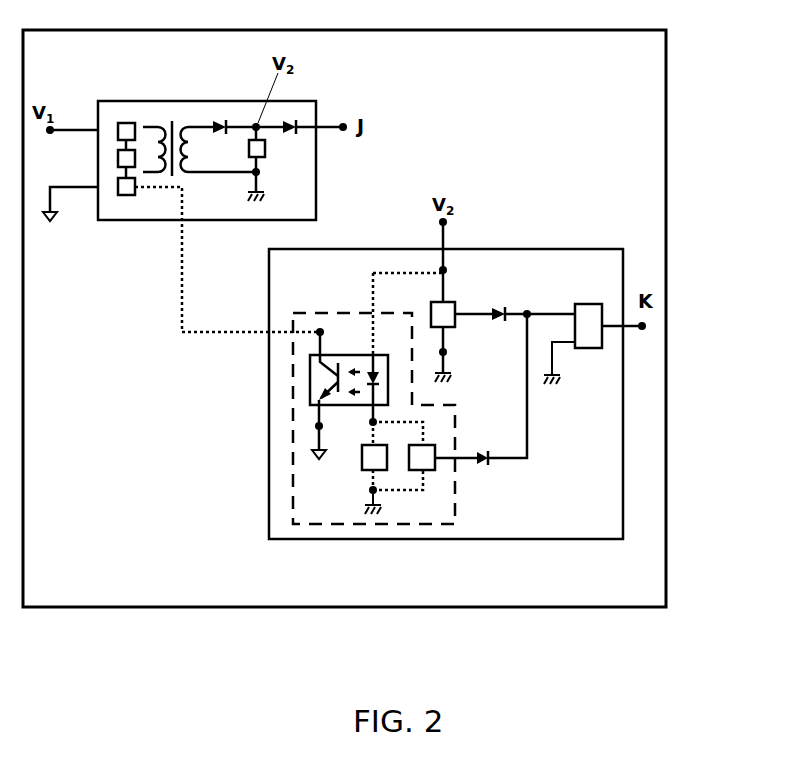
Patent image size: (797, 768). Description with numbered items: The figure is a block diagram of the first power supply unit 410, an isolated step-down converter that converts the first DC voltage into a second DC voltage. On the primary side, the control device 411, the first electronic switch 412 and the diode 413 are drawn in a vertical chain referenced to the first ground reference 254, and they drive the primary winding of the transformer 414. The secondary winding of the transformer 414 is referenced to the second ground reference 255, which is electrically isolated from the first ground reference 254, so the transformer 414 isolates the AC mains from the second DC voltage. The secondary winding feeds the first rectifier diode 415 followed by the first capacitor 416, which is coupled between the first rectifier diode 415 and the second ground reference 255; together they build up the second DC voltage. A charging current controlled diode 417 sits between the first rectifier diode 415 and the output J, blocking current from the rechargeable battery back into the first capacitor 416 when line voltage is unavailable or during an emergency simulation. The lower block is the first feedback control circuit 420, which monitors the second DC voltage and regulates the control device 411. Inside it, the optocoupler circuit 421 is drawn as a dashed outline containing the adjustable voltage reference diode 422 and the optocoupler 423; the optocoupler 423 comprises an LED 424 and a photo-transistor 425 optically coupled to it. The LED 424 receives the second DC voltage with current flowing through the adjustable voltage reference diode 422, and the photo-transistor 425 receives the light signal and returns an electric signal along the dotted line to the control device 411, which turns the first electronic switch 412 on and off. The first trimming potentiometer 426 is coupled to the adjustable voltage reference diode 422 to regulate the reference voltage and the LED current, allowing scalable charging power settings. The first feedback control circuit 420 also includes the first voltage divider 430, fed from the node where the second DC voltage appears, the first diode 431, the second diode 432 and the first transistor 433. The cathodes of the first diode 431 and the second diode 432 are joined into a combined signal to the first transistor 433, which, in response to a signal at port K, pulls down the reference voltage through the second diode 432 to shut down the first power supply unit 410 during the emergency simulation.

The first power supply unit 410 is at (672, 296).
The control device 411 is at (127, 196).
The first electronic switch 412 is at (118, 164).
The diode 413 is at (126, 122).
The transformer 414 is at (177, 122).
The first rectifier diode 415 is at (218, 121).
The first capacitor 416 is at (265, 157).
The charging current controlled diode 417 is at (297, 120).
The first feedback control circuit 420 is at (632, 450).
The optocoupler circuit 421 is at (284, 372).
The adjustable voltage reference diode 422 is at (436, 472).
The optocoupler 423 is at (343, 344).
The LED 424 is at (374, 374).
The photo-transistor 425 is at (327, 382).
The first trimming potentiometer 426 is at (360, 457).
The first voltage divider 430 is at (457, 302).
The first diode 431 is at (500, 300).
The second diode 432 is at (489, 463).
The first transistor 433 is at (590, 303).
The first ground reference 254 is at (47, 211).
The second ground reference 255 is at (250, 203).